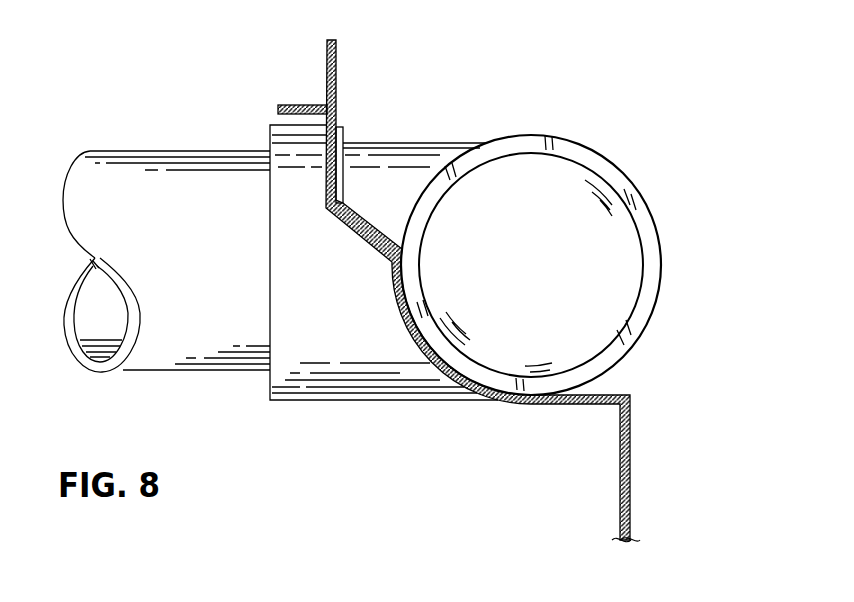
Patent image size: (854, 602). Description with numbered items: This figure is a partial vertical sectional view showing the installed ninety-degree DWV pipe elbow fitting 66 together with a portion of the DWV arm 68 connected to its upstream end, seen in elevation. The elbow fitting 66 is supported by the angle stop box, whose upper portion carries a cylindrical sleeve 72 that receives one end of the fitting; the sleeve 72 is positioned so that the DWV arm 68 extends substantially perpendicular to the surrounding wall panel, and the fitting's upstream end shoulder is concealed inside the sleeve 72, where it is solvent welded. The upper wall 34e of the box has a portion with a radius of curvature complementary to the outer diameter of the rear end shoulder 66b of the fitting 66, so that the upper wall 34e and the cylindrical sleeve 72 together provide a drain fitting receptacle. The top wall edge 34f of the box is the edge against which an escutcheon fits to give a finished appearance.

The DWV arm 68 is at (152, 150).
The cylindrical sleeve 72 is at (320, 394).
The top wall edge 34f is at (292, 103).
The upper wall 34e is at (442, 370).
The ninety-degree DWV pipe elbow fitting 66 is at (400, 136).
The rear end shoulder 66b is at (652, 305).